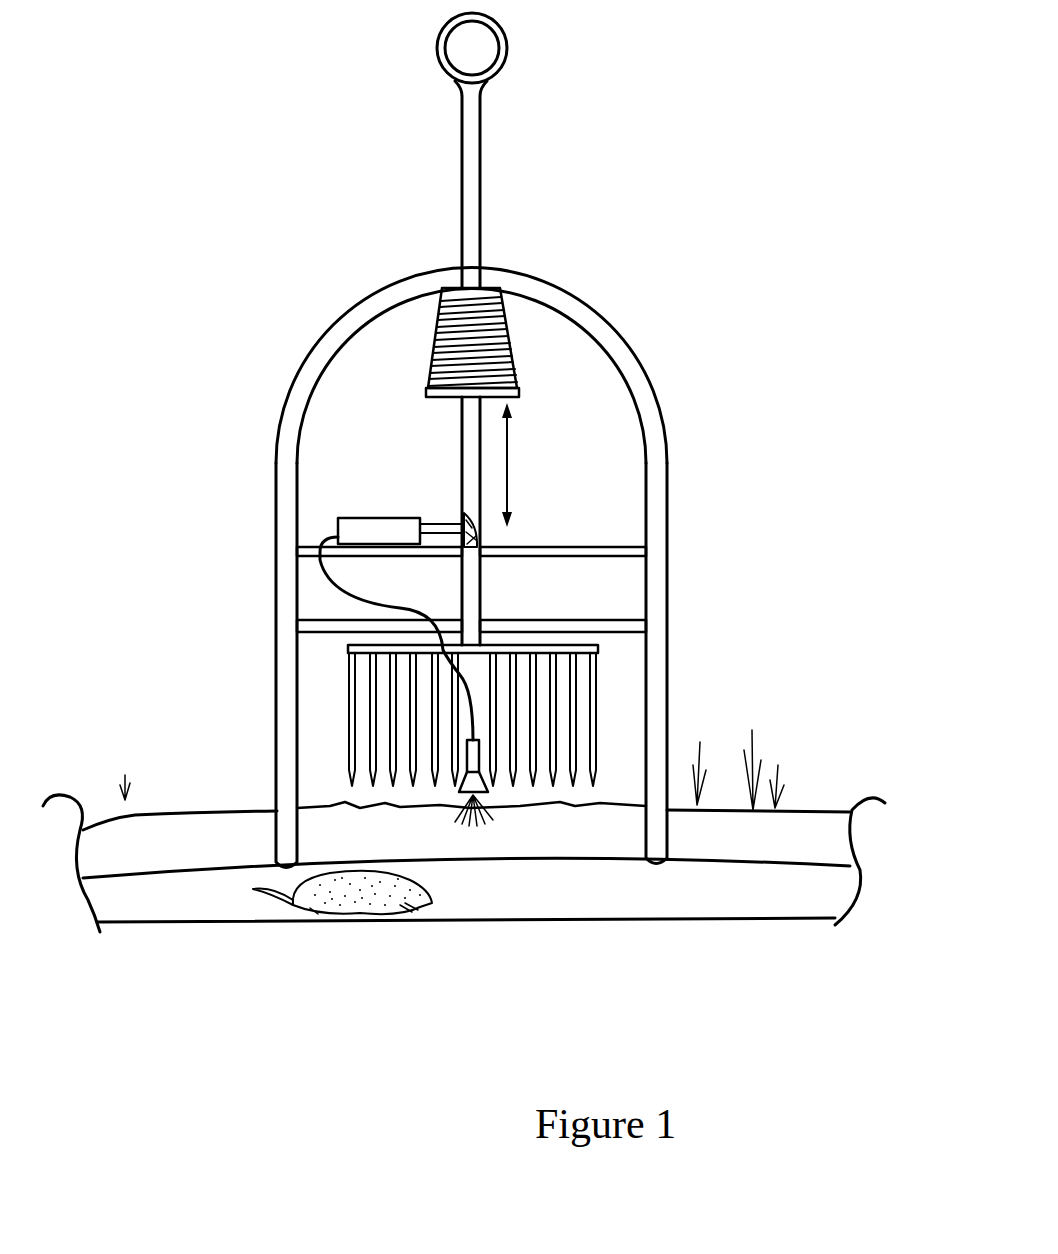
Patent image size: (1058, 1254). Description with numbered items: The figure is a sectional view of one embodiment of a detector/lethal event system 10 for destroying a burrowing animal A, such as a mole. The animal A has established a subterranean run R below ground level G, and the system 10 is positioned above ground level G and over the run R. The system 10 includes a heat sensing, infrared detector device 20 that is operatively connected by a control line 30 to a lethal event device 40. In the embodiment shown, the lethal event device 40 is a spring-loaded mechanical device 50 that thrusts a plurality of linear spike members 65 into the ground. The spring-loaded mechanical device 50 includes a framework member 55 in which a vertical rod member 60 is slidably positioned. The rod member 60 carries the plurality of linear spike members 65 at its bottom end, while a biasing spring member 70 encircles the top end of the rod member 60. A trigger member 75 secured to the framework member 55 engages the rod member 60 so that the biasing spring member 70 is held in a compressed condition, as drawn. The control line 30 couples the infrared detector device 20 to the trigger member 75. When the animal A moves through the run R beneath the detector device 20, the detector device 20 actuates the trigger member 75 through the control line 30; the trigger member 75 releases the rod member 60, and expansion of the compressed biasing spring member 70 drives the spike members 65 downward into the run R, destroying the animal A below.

The detector/lethal event system 10 is at (728, 180).
The heat sensing, infrared detector device 20 is at (468, 790).
The control line 30 is at (297, 590).
The lethal event device 40 is at (228, 420).
The spring-loaded mechanical device 50 is at (532, 262).
The framework member 55 is at (657, 515).
The vertical rod member 60 is at (470, 148).
The linear spike members 65 is at (375, 713).
The biasing spring member 70 is at (507, 345).
The trigger member 75 is at (370, 530).
The ground level G is at (464, 831).
The subterranean run R is at (466, 890).
The animal A is at (353, 898).